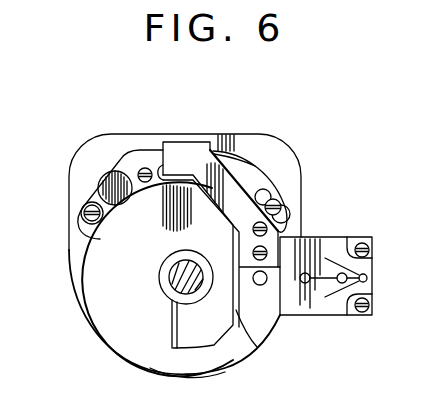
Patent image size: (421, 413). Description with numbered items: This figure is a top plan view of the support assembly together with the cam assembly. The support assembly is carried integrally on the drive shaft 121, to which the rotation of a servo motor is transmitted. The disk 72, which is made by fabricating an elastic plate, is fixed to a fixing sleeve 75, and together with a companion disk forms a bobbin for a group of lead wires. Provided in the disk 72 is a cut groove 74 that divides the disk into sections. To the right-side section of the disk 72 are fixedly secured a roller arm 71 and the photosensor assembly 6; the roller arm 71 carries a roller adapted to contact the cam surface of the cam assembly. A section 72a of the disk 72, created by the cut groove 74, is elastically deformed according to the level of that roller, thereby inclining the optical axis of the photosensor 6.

The photosensor assembly 6 is at (325, 237).
The roller arm 71 is at (185, 141).
The disk 72 is at (96, 307).
The section of the disk 72a is at (188, 364).
The cut groove 74 is at (252, 347).
The fixing sleeve 75 is at (170, 308).
The drive shaft 121 is at (172, 274).